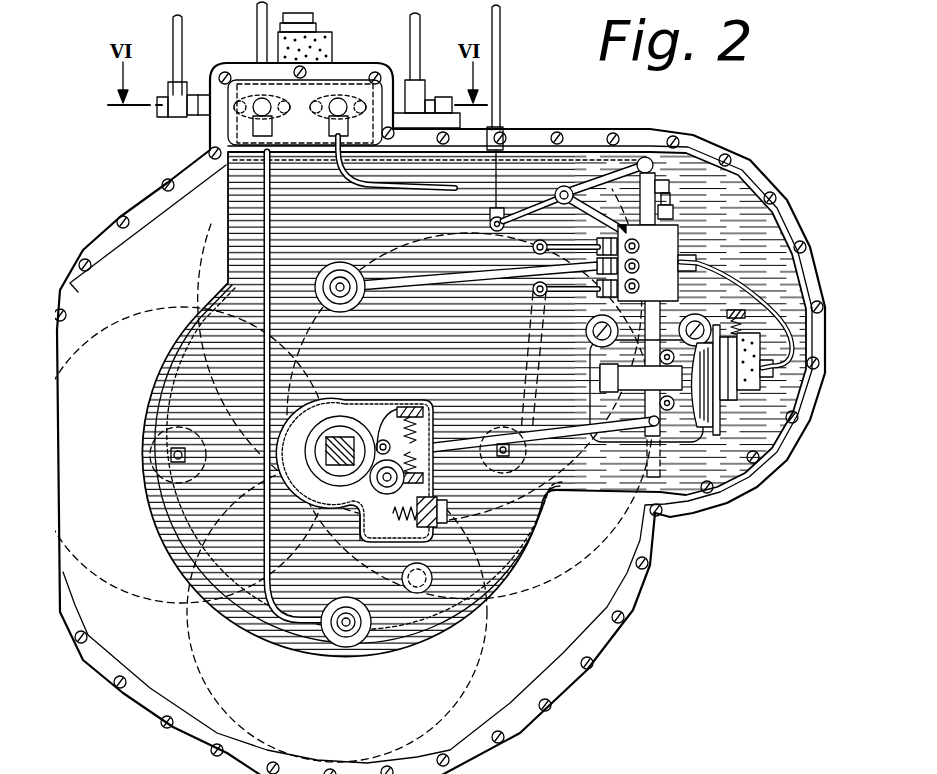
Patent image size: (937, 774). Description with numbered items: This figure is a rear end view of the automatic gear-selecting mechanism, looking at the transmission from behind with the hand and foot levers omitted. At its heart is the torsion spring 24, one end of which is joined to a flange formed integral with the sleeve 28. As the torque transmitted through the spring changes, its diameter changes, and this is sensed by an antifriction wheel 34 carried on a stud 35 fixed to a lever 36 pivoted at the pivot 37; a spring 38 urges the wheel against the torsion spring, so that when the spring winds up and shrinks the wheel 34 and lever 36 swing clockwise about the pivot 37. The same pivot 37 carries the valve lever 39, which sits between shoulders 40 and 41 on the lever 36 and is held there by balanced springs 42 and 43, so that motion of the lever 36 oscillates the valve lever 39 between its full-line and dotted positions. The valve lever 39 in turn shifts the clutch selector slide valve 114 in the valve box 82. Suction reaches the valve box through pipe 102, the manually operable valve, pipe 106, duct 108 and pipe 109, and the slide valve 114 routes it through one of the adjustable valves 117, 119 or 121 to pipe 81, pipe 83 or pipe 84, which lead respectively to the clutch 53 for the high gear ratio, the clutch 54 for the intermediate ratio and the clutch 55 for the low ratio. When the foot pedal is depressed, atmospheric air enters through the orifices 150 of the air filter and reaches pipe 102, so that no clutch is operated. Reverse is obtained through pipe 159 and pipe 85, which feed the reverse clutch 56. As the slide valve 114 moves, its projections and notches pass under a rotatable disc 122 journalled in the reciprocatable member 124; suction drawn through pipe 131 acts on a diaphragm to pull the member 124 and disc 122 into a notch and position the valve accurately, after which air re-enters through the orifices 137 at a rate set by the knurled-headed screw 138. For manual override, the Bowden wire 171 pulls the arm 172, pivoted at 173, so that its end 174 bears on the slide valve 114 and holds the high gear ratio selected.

The pipe 159 is at (173, 32).
The pipe 102 is at (257, 12).
The orifices of the air filter 150 is at (332, 45).
The duct 108 is at (350, 82).
The pipe 106 is at (420, 32).
The Bowden wire 171 is at (500, 15).
The pivot 173 is at (566, 186).
The end of lever 174 is at (647, 155).
The clutch selector slide valve 114 is at (650, 205).
The valve box 82 is at (680, 247).
The adjustable valve 121 is at (651, 244).
The adjustable valve 119 is at (639, 266).
The adjustable valve 117 is at (639, 286).
The adjustable coned knurled headed screw 138 is at (740, 303).
The pipe 131 is at (747, 303).
The orifices 137 is at (749, 345).
The pipe 84 is at (545, 248).
The pipe 83 is at (440, 274).
The pipe 81 is at (588, 293).
The arm 172 is at (500, 226).
The rotatable disc 122 is at (604, 372).
The reciprocatable member 124 is at (604, 423).
The pipe 85 is at (273, 252).
The pipe 109 is at (375, 197).
The clutch 54 is at (208, 227).
The clutch 55 is at (139, 330).
The clutch 53 is at (548, 598).
The clutch 56 is at (481, 683).
The lever 36 is at (392, 418).
The pivot 37 is at (380, 441).
The shoulder 41 is at (418, 400).
The spring 43 is at (427, 410).
The valve lever 39 is at (494, 422).
The spring 42 is at (436, 464).
The shoulder 40 is at (438, 481).
The stud 35 is at (449, 512).
The sleeve 28 is at (325, 459).
The torsion spring 24 is at (333, 480).
The antifriction wheel 34 is at (357, 517).
The spring 38 is at (402, 574).